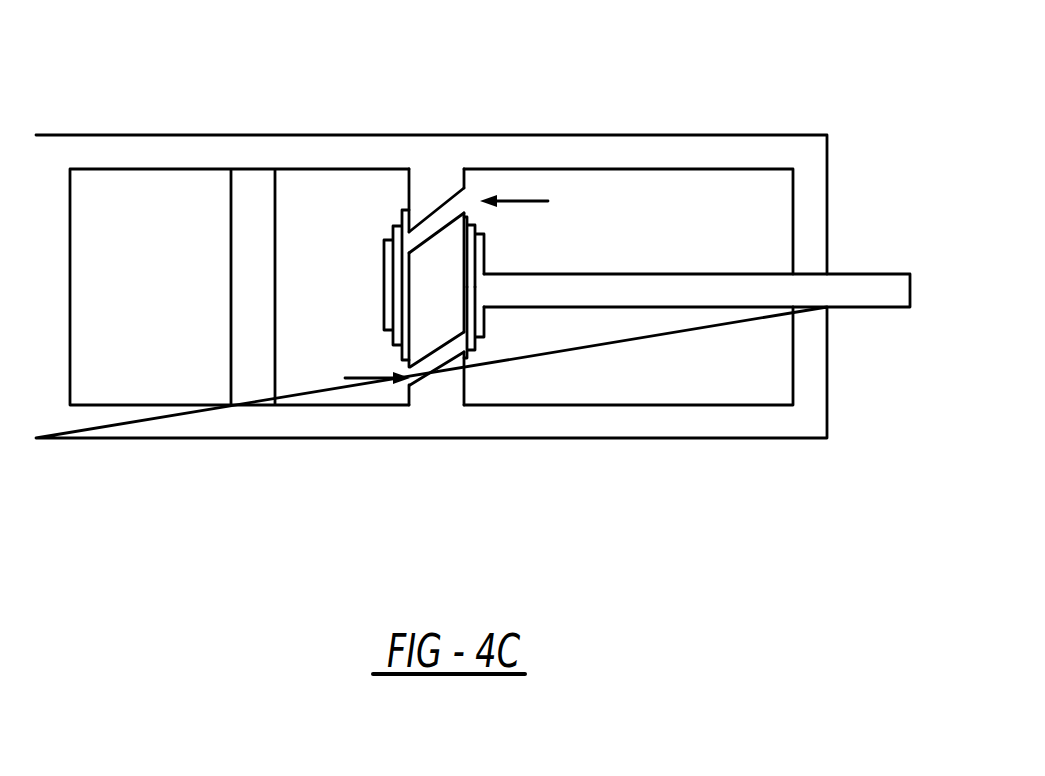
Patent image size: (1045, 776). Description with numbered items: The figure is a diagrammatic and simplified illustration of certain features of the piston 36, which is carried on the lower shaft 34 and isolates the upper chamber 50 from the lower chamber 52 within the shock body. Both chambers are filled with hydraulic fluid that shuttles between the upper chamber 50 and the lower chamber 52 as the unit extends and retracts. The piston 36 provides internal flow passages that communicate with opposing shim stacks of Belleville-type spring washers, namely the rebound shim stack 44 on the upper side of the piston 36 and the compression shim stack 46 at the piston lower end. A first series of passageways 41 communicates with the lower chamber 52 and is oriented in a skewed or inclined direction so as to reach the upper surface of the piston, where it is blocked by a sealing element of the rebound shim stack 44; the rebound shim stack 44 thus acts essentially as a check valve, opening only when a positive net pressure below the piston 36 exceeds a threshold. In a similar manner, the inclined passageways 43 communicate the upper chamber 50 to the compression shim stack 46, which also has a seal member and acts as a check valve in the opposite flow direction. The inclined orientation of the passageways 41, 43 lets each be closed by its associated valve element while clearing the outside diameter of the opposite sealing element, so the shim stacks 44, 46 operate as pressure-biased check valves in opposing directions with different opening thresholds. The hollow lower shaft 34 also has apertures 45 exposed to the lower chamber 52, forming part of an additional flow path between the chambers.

The lower shaft 34 is at (688, 312).
The piston 36 is at (443, 178).
The first series of passageways 41 is at (427, 230).
The inclined passageways 43 is at (432, 385).
The rebound shim stack 44 is at (397, 340).
The apertures 45 is at (487, 248).
The compression shim stack 46 is at (487, 340).
The upper chamber 50 is at (293, 367).
The lower chamber 52 is at (663, 210).